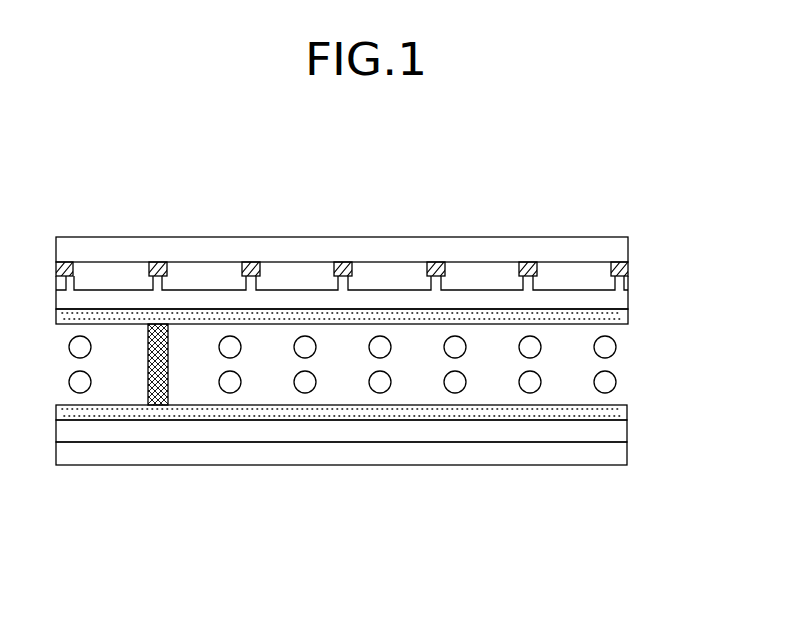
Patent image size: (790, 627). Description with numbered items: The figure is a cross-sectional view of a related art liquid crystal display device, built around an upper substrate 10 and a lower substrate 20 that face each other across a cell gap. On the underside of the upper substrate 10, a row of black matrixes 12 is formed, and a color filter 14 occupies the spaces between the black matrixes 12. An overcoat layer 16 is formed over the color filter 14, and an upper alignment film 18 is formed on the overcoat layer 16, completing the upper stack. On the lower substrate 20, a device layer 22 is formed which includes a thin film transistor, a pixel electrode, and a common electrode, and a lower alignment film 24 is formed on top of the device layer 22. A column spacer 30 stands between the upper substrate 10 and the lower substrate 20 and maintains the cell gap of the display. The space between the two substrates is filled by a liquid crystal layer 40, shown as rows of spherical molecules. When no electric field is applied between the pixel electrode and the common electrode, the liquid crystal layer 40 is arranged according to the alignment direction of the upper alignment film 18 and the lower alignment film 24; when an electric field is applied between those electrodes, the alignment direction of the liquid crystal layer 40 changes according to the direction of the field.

The upper substrate 10 is at (623, 247).
The black matrixes 12 is at (630, 268).
The color filter 14 is at (577, 275).
The overcoat layer 16 is at (623, 297).
The upper alignment film 18 is at (623, 318).
The lower substrate 20 is at (625, 452).
The device layer 22 is at (625, 430).
The lower alignment film 24 is at (625, 408).
The column spacer 30 is at (158, 405).
The liquid crystal layer 40 is at (623, 367).